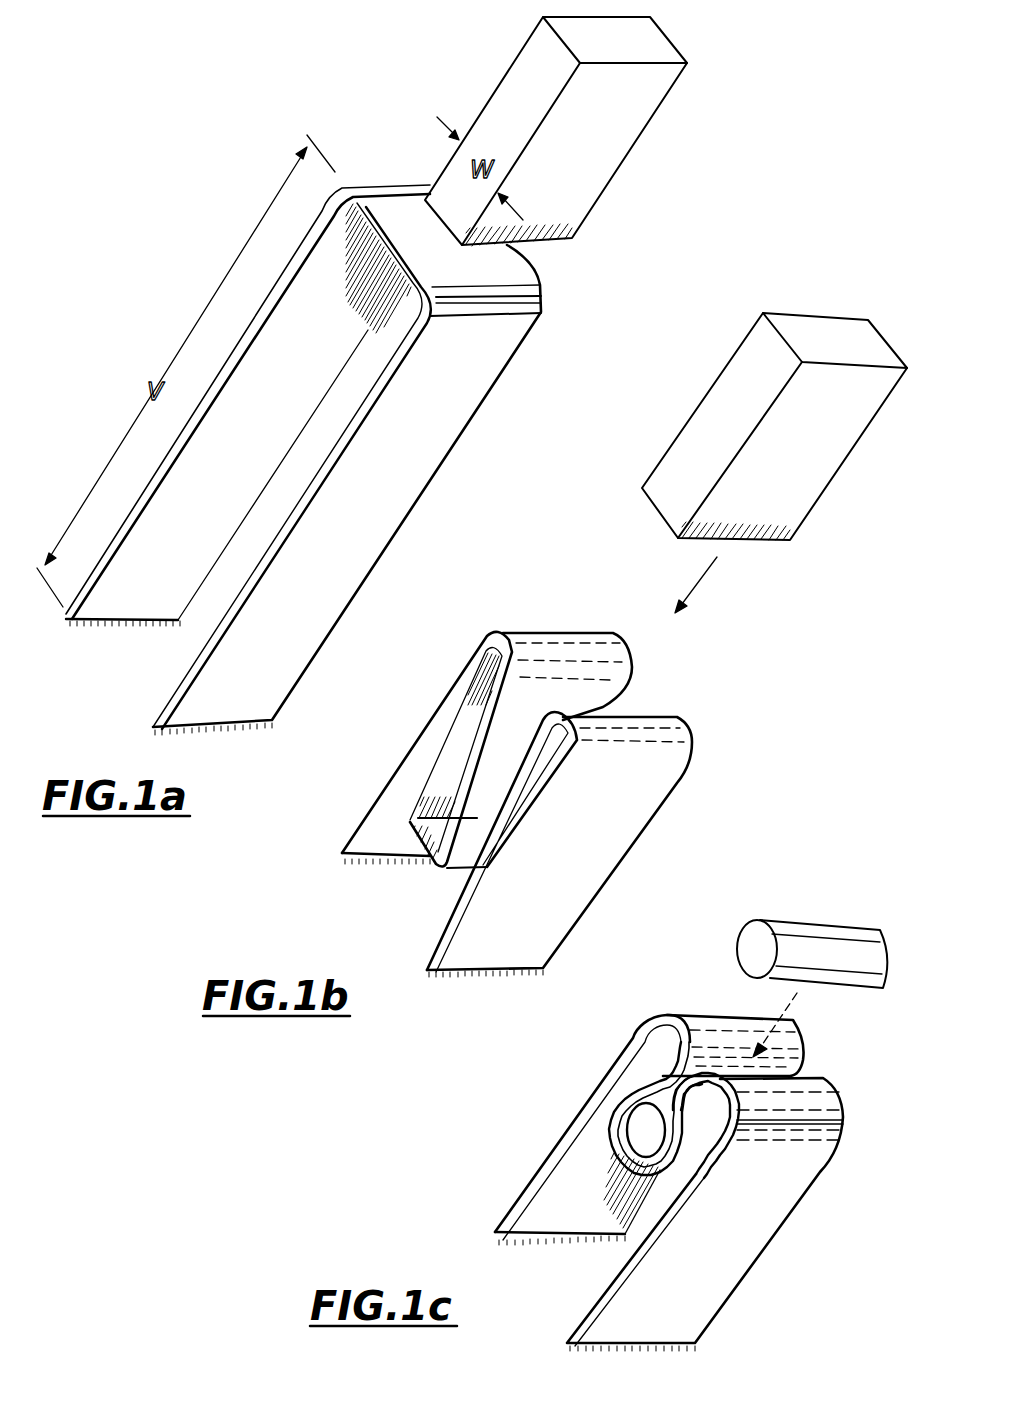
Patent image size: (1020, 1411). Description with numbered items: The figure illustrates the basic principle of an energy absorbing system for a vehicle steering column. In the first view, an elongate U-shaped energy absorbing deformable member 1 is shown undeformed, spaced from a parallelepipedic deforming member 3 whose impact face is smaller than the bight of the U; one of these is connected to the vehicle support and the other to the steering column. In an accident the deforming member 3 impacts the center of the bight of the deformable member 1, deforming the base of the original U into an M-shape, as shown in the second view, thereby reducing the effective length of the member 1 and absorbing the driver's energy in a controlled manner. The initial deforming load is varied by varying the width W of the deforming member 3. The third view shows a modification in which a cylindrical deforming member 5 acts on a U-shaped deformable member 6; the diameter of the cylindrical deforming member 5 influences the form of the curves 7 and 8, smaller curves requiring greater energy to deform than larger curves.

In FIG. 1A, the deformable member 1 is at (358, 552).
In FIG. 1B, the deformable member 1 is at (457, 947).
In FIG. 1A, the deforming member 3 is at (600, 188).
In FIG. 1C, the cylindrical deforming member 5 is at (803, 942).
In FIG. 1C, the U-shaped deformable member 6 is at (737, 1270).
In FIG. 1C, the curve 7 is at (640, 1045).
In FIG. 1C, the curve 8 is at (713, 1135).